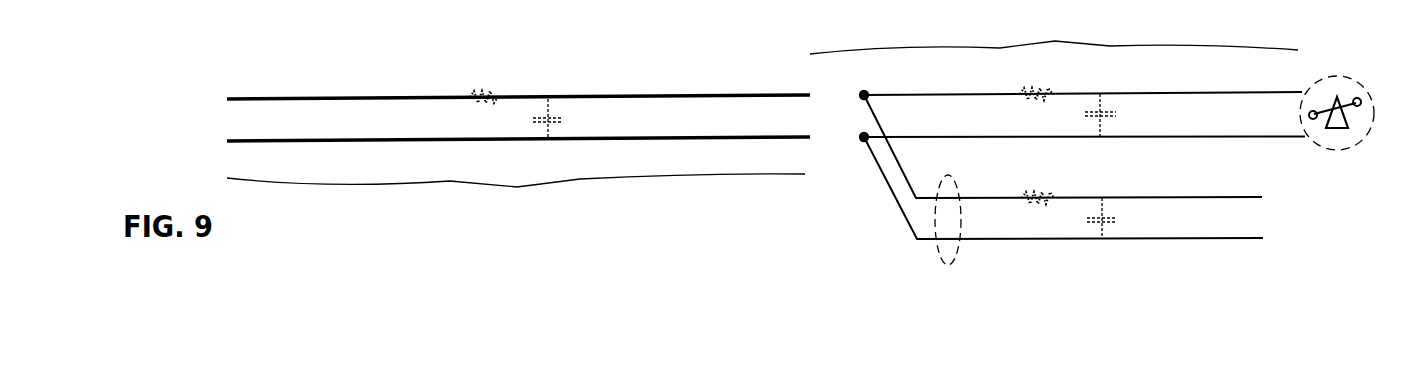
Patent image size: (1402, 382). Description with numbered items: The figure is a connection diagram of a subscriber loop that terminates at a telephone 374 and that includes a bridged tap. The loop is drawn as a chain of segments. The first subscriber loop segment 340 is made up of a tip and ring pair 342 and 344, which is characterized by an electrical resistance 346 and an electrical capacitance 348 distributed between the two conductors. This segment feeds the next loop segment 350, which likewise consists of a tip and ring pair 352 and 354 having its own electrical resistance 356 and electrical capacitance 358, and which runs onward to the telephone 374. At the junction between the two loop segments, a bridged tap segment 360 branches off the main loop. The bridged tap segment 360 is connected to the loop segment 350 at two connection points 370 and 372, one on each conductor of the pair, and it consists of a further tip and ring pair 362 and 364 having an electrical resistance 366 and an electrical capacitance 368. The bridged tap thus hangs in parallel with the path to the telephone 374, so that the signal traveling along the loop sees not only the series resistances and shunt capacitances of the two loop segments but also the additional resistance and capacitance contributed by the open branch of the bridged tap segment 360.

The subscriber loop segment 340 is at (516, 196).
The tip and ring pair 342 is at (733, 139).
The tip and ring pair 344 is at (663, 96).
The electrical resistance 346 is at (473, 92).
The electrical capacitance 348 is at (546, 139).
The loop segment 350 is at (1054, 35).
The tip and ring pair 352 is at (1281, 137).
The tip and ring pair 354 is at (1214, 92).
The electrical resistance 356 is at (1026, 90).
The electrical capacitance 358 is at (1098, 126).
The bridged tap segment 360 is at (945, 265).
The tip and ring pair 362 is at (1240, 239).
The tip and ring pair 364 is at (1166, 197).
The electrical resistance 366 is at (1028, 194).
The electrical capacitance 368 is at (1100, 239).
The connection point 370 is at (862, 143).
The connection point 372 is at (869, 92).
The telephone 374 is at (1336, 78).